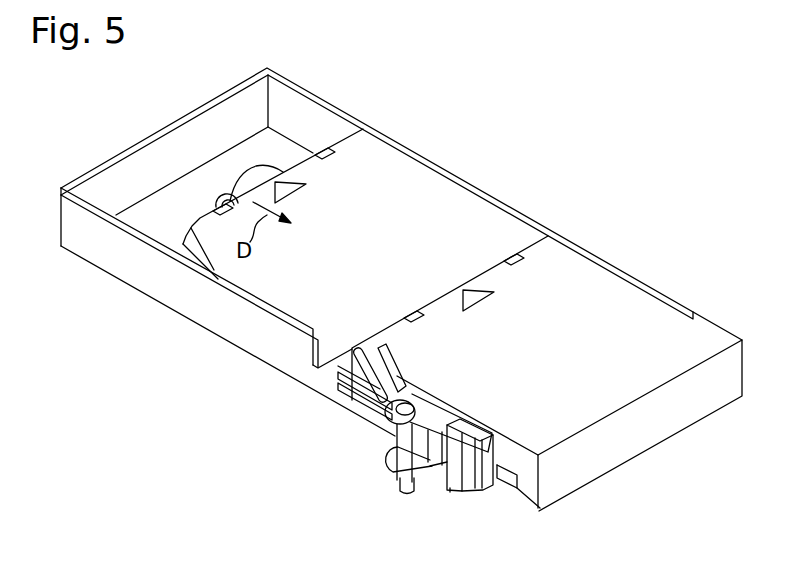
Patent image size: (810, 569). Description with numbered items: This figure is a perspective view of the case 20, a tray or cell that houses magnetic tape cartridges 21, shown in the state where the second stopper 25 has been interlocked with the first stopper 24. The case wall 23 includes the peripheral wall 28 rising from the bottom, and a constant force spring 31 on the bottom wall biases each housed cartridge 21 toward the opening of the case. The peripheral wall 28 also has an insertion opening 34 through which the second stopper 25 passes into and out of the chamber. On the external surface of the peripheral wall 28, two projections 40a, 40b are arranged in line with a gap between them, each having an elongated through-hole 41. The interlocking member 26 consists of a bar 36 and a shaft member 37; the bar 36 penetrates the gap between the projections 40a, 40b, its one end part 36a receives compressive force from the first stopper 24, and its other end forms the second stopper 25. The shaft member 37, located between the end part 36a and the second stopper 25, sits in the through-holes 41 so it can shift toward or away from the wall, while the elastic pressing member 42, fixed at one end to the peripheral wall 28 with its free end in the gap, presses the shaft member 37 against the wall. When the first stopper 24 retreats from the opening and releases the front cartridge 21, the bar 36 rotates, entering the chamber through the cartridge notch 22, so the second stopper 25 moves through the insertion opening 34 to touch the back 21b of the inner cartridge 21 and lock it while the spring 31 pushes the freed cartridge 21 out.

The case 20 is at (668, 246).
The magnetic tape cartridge 21 is at (398, 163).
The back of the cartridge 21b is at (377, 340).
The notch 22 is at (183, 245).
The case wall 23 is at (142, 266).
The first stopper 24 is at (474, 487).
The second stopper 25 is at (362, 347).
The interlocking member 26 is at (360, 402).
The peripheral wall 28 is at (200, 304).
The constant force spring 31 is at (247, 178).
The insertion opening 34 is at (331, 343).
The bar 36 is at (346, 377).
The one end part of the bar 36a is at (452, 486).
The shaft member 37 is at (410, 496).
The projection 40a is at (423, 401).
The projection 40b is at (392, 470).
The through-hole 41 is at (408, 396).
The pressing member 42 is at (352, 418).